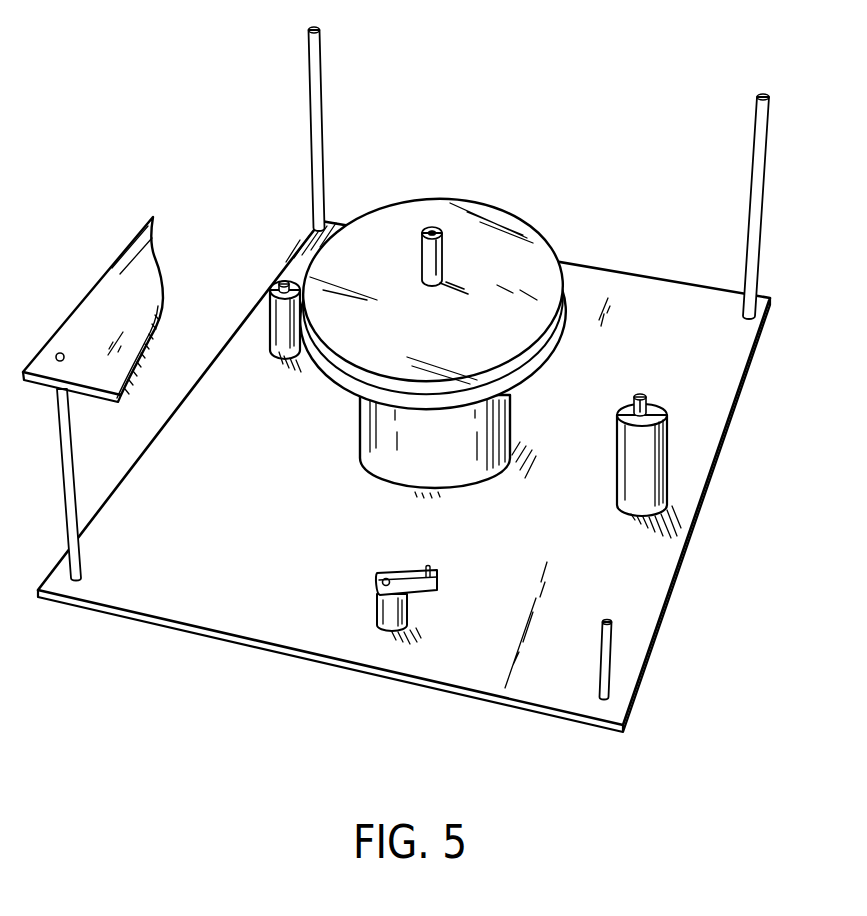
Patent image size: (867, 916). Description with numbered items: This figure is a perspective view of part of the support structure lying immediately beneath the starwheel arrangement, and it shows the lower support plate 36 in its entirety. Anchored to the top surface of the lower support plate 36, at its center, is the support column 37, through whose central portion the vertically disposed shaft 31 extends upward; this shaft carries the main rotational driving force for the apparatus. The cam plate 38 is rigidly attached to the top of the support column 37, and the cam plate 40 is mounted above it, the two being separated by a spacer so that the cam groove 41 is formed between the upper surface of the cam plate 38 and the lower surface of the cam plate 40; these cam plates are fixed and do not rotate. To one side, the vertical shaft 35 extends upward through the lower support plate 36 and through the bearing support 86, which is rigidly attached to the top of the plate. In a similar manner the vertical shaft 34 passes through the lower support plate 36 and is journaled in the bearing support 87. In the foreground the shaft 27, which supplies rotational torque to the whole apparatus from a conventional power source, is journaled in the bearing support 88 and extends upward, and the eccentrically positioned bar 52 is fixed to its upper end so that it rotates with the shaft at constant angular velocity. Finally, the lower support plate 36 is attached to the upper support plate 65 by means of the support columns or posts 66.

The shaft 27 is at (382, 580).
The vertically disposed shaft 31 is at (421, 256).
The vertical shaft 34 is at (280, 281).
The vertical shaft 35 is at (648, 395).
The lower support plate 36 is at (222, 541).
The support column 37 is at (443, 452).
The cam plate 38 is at (528, 372).
The cam plate 40 is at (436, 341).
The cam groove 41 is at (358, 383).
The eccentrically positioned bar 52 is at (403, 572).
The upper support plate 65 is at (133, 311).
The support columns or posts 66 is at (313, 144).
The bearing support 86 is at (667, 478).
The bearing support 87 is at (270, 311).
The bearing support 88 is at (408, 610).